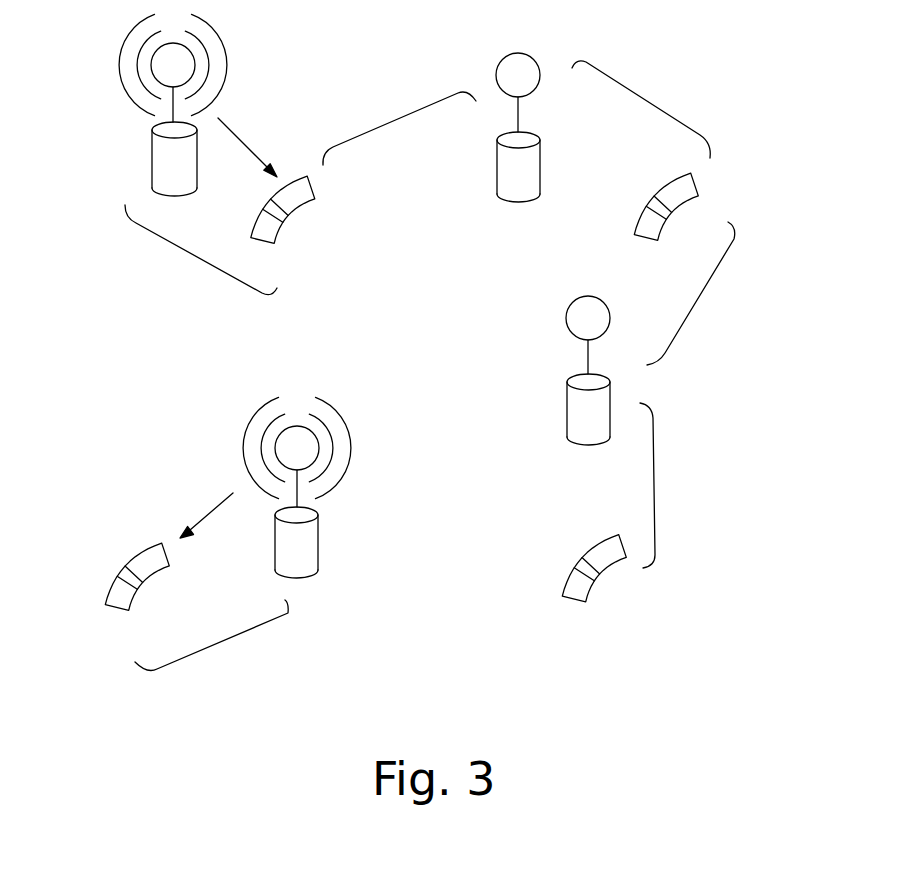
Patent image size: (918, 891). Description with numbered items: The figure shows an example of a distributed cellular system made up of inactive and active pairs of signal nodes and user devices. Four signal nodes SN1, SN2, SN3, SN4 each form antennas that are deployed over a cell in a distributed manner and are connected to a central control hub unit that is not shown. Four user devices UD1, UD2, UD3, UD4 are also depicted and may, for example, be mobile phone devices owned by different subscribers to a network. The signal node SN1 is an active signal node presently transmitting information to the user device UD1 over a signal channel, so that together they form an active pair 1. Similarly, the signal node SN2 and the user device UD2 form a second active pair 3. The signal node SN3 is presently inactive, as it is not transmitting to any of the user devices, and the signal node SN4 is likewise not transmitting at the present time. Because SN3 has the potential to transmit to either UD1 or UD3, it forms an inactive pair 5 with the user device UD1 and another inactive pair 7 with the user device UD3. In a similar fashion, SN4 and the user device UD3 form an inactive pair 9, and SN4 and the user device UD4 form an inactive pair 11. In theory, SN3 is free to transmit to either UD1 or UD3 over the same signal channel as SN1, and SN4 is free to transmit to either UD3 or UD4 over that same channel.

The active pair 1 is at (163, 243).
The second active pair 3 is at (218, 647).
The inactive pair 5 is at (408, 113).
The inactive pair 7 is at (635, 88).
The inactive pair 9 is at (710, 287).
The inactive pair 11 is at (657, 470).
The signal node SN1 is at (162, 105).
The signal node SN2 is at (308, 487).
The signal node SN3 is at (519, 145).
The signal node SN4 is at (561, 370).
The user device UD1 is at (305, 212).
The user device UD2 is at (127, 576).
The user device UD3 is at (698, 206).
The user device UD4 is at (574, 585).